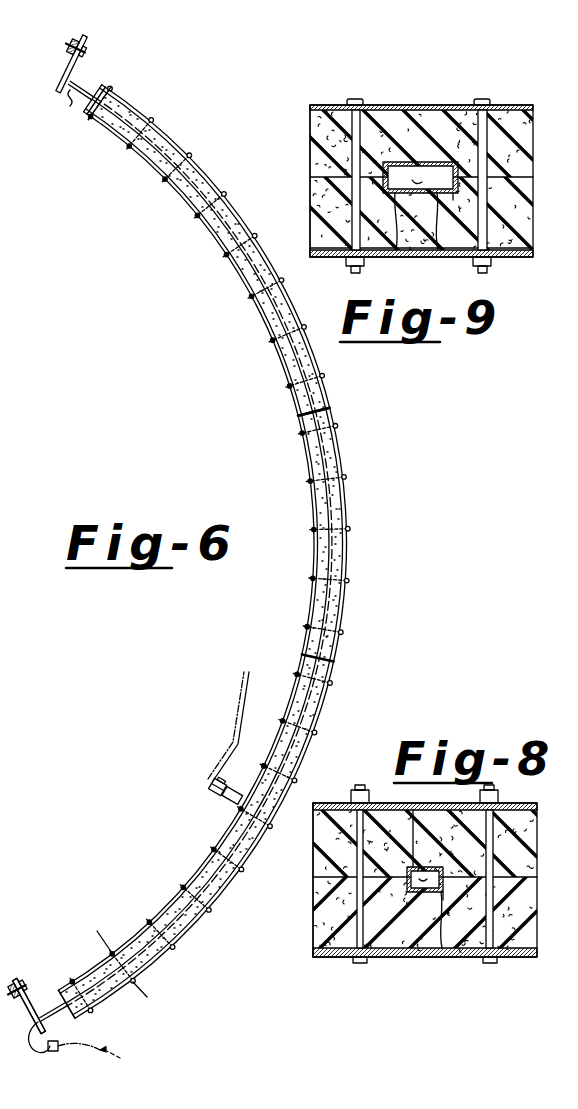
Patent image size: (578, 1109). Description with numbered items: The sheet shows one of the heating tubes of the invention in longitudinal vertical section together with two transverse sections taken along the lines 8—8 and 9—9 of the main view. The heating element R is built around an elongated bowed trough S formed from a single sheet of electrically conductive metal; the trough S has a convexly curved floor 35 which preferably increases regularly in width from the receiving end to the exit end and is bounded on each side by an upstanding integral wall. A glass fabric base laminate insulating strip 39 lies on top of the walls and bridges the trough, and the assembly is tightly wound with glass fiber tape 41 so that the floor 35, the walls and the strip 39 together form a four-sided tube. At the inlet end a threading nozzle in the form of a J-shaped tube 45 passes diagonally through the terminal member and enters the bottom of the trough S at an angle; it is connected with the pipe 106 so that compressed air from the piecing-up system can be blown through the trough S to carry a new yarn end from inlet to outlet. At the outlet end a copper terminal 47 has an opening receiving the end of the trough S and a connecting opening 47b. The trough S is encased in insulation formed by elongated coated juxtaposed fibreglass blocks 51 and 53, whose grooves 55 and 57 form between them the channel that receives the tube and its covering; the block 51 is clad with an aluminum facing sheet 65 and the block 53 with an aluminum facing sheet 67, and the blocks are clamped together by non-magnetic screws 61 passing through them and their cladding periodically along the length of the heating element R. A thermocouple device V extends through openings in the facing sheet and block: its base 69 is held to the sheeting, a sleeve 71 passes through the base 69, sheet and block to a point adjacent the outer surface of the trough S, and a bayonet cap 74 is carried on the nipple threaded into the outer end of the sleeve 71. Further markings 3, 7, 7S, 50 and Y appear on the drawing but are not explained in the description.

In FIG. 6, the anchor member 3 is at (25, 1007).
In FIG. 6, the section line 7- 7 is at (50, 64).
In FIG. 6, the end portion 7S is at (74, 110).
In FIG. 6, the section line 8— 8 is at (0, 1033).
In FIG. 6, the section line 9— 9 is at (199, 127).
In FIG. 8, the convexly curved floor 35 is at (442, 865).
In FIG. 9, the glass fabric base laminate insulating strip 39 is at (436, 162).
In FIG. 8, the glass fabric base laminate insulating strip 39 is at (415, 893).
In FIG. 9, the glass fiber tape 41 is at (382, 258).
In FIG. 8, the glass fiber tape 41 is at (413, 867).
In FIG. 6, the J-shaped tube 45 is at (30, 1052).
In FIG. 6, the copper terminal 47 is at (67, 59).
In FIG. 6, the connecting opening 47b is at (90, 48).
In FIG. 6, the end plate 50 is at (86, 38).
In FIG. 6, the fibreglass block 51 is at (293, 318).
In FIG. 9, the fibreglass block 51 is at (320, 140).
In FIG. 8, the fibreglass block 51 is at (313, 922).
In FIG. 6, the fibreglass block 53 is at (272, 322).
In FIG. 9, the fibreglass block 53 is at (315, 218).
In FIG. 8, the fibreglass block 53 is at (315, 852).
In FIG. 9, the groove 55 is at (395, 162).
In FIG. 9, the groove 57 is at (415, 254).
In FIG. 6, the non-magnetic screws 61 is at (343, 630).
In FIG. 9, the non-magnetic screws 61 is at (354, 99).
In FIG. 8, the non-magnetic screws 61 is at (360, 963).
In FIG. 6, the aluminum facing sheet 65 is at (307, 660).
In FIG. 9, the aluminum facing sheet 65 is at (510, 105).
In FIG. 8, the aluminum facing sheet 65 is at (528, 803).
In FIG. 6, the aluminum facing sheet 67 is at (318, 717).
In FIG. 9, the aluminum facing sheet 67 is at (514, 258).
In FIG. 8, the aluminum facing sheet 67 is at (523, 957).
In FIG. 6, the base 69 is at (256, 784).
In FIG. 6, the sleeve 71 is at (227, 808).
In FIG. 6, the bayonet cap 74 is at (210, 795).
In FIG. 6, the pipe 106 is at (84, 1050).
In FIG. 6, the heating element R is at (338, 458).
In FIG. 9, the heating element R is at (321, 95).
In FIG. 8, the heating element R is at (336, 800).
In FIG. 6, the trough S is at (42, 1018).
In FIG. 9, the trough S is at (453, 258).
In FIG. 8, the trough S is at (444, 957).
In FIG. 6, the thermocouple device V is at (213, 779).
In FIG. 6, the pocket Y is at (44, 100).
In FIG. 9, the pocket Y is at (407, 179).
In FIG. 8, the pocket Y is at (429, 833).